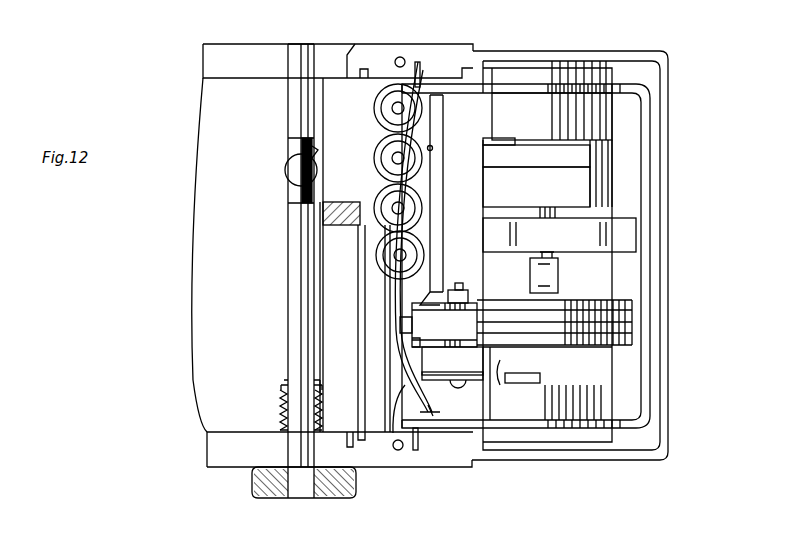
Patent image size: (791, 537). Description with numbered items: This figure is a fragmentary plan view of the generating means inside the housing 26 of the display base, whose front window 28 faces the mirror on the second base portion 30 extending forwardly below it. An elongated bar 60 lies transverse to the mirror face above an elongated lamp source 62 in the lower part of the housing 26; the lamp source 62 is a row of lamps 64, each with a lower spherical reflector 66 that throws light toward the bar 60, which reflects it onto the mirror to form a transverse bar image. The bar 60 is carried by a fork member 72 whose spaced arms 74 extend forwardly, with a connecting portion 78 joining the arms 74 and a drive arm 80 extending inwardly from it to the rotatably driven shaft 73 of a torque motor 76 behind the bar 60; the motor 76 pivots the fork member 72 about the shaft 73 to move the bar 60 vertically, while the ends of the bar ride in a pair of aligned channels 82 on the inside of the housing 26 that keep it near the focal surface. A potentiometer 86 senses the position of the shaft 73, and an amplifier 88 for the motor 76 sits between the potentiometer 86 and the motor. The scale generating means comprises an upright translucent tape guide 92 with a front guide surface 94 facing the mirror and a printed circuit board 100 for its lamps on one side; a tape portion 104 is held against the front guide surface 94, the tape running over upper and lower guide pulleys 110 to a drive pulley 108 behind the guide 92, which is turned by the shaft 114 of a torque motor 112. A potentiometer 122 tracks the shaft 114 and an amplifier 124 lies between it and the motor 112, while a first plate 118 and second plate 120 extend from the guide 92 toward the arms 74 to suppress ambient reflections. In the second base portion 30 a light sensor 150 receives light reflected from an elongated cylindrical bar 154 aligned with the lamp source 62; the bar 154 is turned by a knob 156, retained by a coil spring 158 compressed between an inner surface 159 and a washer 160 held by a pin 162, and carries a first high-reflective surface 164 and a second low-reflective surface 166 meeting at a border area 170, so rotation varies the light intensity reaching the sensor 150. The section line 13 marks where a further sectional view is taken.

The section line 13- 13 is at (163, 332).
The housing 26 is at (667, 105).
The front window 28 is at (360, 287).
The second base portion 30 is at (250, 43).
The elongated bar 60 is at (392, 468).
The elongated lamp source 62 is at (392, 158).
The lamps 64 is at (387, 108).
The lower spherical reflector 66 is at (378, 197).
The fork member 72 is at (647, 158).
The rotatably driven shaft 73 is at (528, 266).
The spaced arms 74 is at (483, 88).
The torque motor 76 is at (547, 199).
The connecting portion 78 is at (647, 275).
The drive arm 80 is at (612, 241).
The aligned channels 82 is at (403, 56).
The potentiometer 86 is at (547, 123).
The amplifier 88 is at (505, 166).
The translucent tape guide 92 is at (466, 327).
The front guide surface 94 is at (425, 330).
The printed circuit board 100 is at (443, 373).
The tape portion 104 is at (412, 318).
The drive pulley 108 is at (577, 289).
The guide pulleys 110 is at (425, 304).
The torque motor 112 is at (618, 345).
The rotatably driven shaft 114 is at (568, 292).
The first plate 118 is at (441, 196).
The second plate 120 is at (428, 399).
The potentiometer 122 is at (553, 410).
The amplifier 124 is at (497, 362).
The light sensor 150 is at (290, 176).
The elongated cylindrical bar 154 is at (299, 265).
The knob 156 is at (268, 498).
The coil spring 158 is at (279, 405).
The inner surface 159 is at (240, 432).
The washer 160 is at (283, 390).
The pin 162 is at (288, 382).
The first high-reflective surface 164 is at (297, 143).
The second low-reflective surface 166 is at (313, 147).
The border area 170 is at (290, 203).